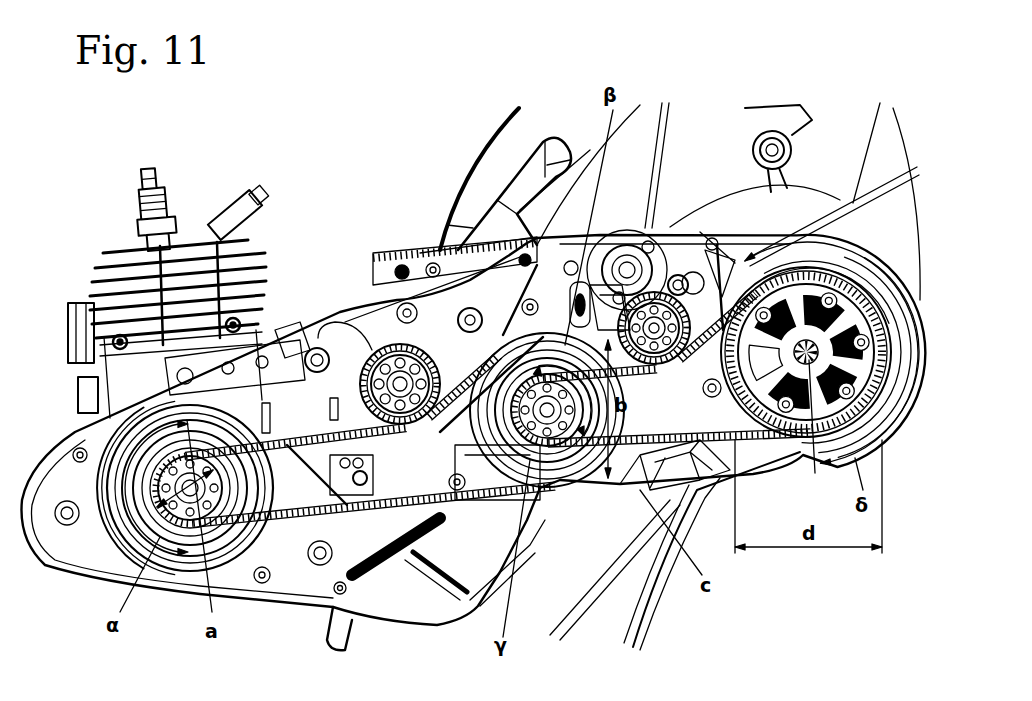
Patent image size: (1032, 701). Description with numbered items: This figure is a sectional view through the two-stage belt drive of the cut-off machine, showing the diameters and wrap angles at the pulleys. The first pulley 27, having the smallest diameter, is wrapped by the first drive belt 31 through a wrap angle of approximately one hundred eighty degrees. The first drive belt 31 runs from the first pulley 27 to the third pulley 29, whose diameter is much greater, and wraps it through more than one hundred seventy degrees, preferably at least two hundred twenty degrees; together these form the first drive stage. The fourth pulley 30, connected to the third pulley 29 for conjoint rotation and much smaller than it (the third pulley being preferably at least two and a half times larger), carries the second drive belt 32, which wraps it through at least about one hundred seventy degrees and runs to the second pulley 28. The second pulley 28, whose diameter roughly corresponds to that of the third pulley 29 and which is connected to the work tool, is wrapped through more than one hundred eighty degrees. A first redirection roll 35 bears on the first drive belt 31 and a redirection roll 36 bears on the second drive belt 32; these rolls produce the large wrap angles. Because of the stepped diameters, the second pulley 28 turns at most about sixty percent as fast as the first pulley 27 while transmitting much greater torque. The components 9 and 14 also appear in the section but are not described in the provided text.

The lever 9 is at (520, 183).
The cylinder 14 is at (185, 277).
The first pulley 27 is at (220, 513).
The second pulley 28 is at (762, 395).
The third pulley 29 is at (530, 450).
The fourth pulley 30 is at (565, 487).
The first drive belt 31 is at (295, 337).
The second drive belt 32 is at (673, 440).
The first redirection roll 35 is at (390, 350).
The redirection roll 36 is at (658, 292).